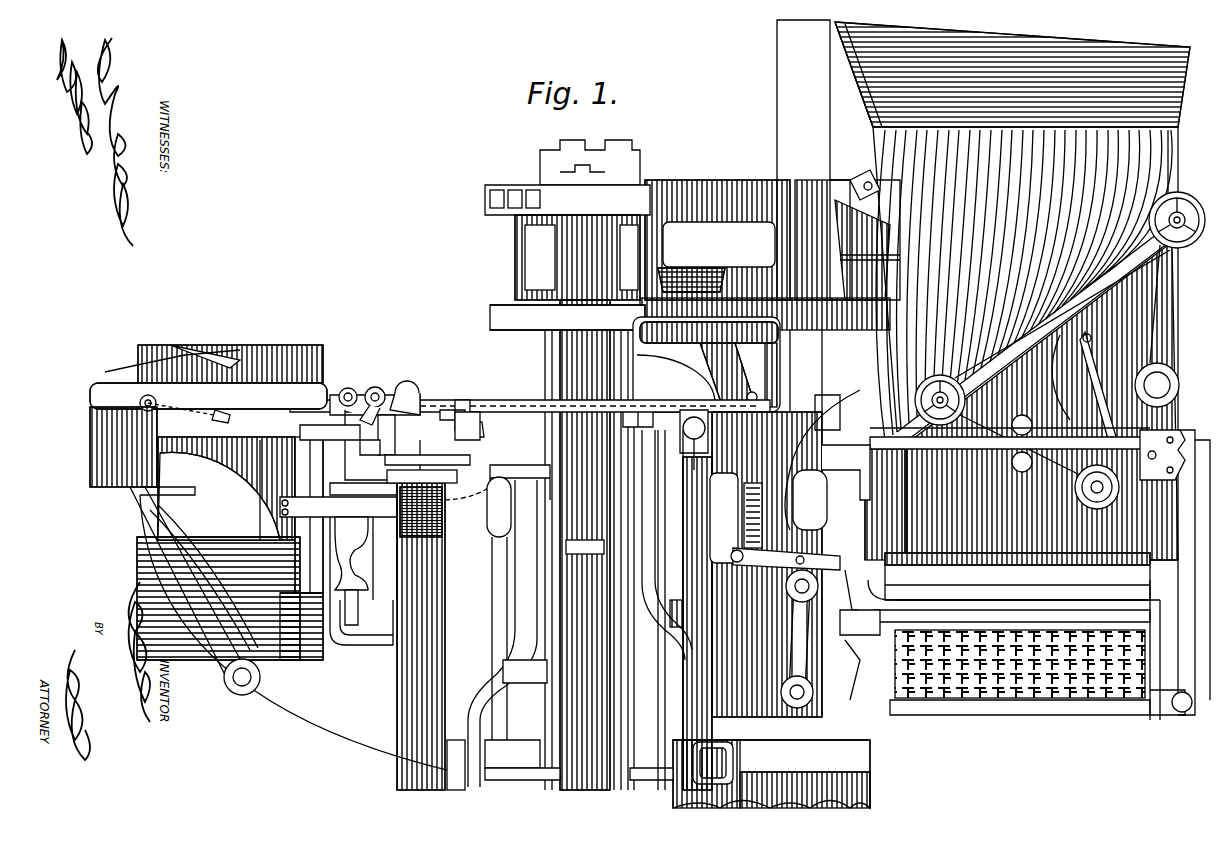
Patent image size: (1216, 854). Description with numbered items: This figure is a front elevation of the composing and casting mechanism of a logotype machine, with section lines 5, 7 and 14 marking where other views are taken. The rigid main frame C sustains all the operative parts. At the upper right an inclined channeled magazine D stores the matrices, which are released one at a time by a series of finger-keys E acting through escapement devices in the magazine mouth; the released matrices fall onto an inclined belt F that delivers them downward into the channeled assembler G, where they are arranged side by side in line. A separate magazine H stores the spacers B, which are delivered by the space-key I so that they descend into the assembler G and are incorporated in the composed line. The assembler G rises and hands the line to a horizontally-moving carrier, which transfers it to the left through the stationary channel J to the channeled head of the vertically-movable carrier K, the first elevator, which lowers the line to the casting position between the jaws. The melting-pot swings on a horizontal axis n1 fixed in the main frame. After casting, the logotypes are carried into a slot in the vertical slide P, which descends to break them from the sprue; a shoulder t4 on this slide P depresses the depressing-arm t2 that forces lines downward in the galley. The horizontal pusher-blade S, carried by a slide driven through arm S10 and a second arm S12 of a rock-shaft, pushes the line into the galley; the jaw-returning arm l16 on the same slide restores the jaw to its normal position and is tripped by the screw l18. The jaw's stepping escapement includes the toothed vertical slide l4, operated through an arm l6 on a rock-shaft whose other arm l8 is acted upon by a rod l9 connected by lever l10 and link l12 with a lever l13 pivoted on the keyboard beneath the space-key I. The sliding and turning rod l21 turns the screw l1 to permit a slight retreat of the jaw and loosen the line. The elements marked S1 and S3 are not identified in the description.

The inclined channeled magazine D is at (1080, 50).
The inclined belt F is at (1190, 242).
The rigid main frame C is at (505, 414).
The spacers B is at (812, 245).
The spacer magazine H is at (845, 245).
The section line 5 5 is at (585, 300).
The vertically-movable carrier (first elevator) K is at (575, 350).
The stationary channel J is at (745, 335).
The arm l8 is at (760, 400).
The channeled assembler G is at (822, 460).
The space-key I is at (1150, 622).
The finger-keys E is at (1015, 690).
The section line 14 14 is at (625, 402).
The stop block S3 is at (270, 352).
The slide bar S1 is at (225, 680).
The jaw-returning arm l16 is at (210, 410).
The pusher-blade S is at (180, 488).
The arm S10 is at (125, 520).
The arm S12 is at (170, 523).
The vertical slide P is at (350, 520).
The screw l18 is at (345, 388).
The horizontal sliding and turning rod l21 is at (376, 386).
The section line 7 7 is at (416, 390).
The vertical slide l4 is at (455, 405).
The screw l1 is at (365, 455).
The shoulder t4 is at (400, 462).
The depressing-arm t2 is at (490, 470).
The arm l6 is at (680, 405).
The horizontal axis n1 is at (480, 790).
The rod l9 is at (736, 518).
The lever l10 is at (737, 550).
The link l12 is at (852, 590).
The lever l13 is at (848, 680).